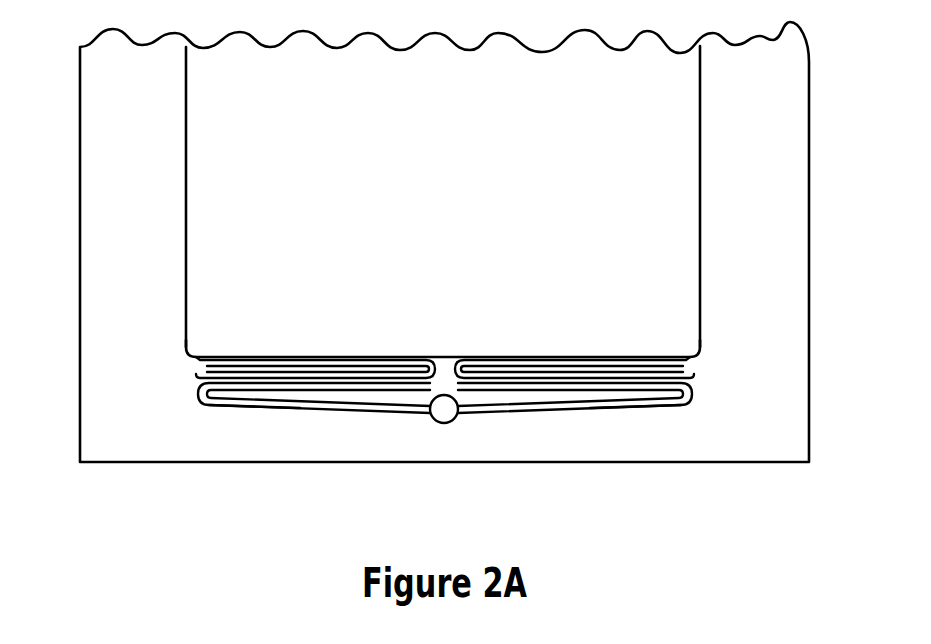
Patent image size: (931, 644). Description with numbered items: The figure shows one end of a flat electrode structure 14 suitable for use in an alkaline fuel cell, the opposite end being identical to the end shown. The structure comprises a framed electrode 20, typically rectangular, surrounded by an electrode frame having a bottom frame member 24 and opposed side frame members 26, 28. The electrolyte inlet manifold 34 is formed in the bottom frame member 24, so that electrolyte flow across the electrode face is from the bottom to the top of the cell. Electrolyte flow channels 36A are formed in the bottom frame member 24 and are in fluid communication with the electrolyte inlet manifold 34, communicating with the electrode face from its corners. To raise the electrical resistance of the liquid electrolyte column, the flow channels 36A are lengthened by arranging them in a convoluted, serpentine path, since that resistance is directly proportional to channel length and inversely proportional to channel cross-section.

The flat electrode structure 14 is at (139, 473).
The framed electrode 20 is at (452, 222).
The bottom frame member 24 is at (540, 430).
The side frame member 26 is at (137, 246).
The side frame member 28 is at (746, 243).
The electrolyte inlet manifold 34 is at (445, 408).
The electrolyte flow channels 36A is at (315, 380).